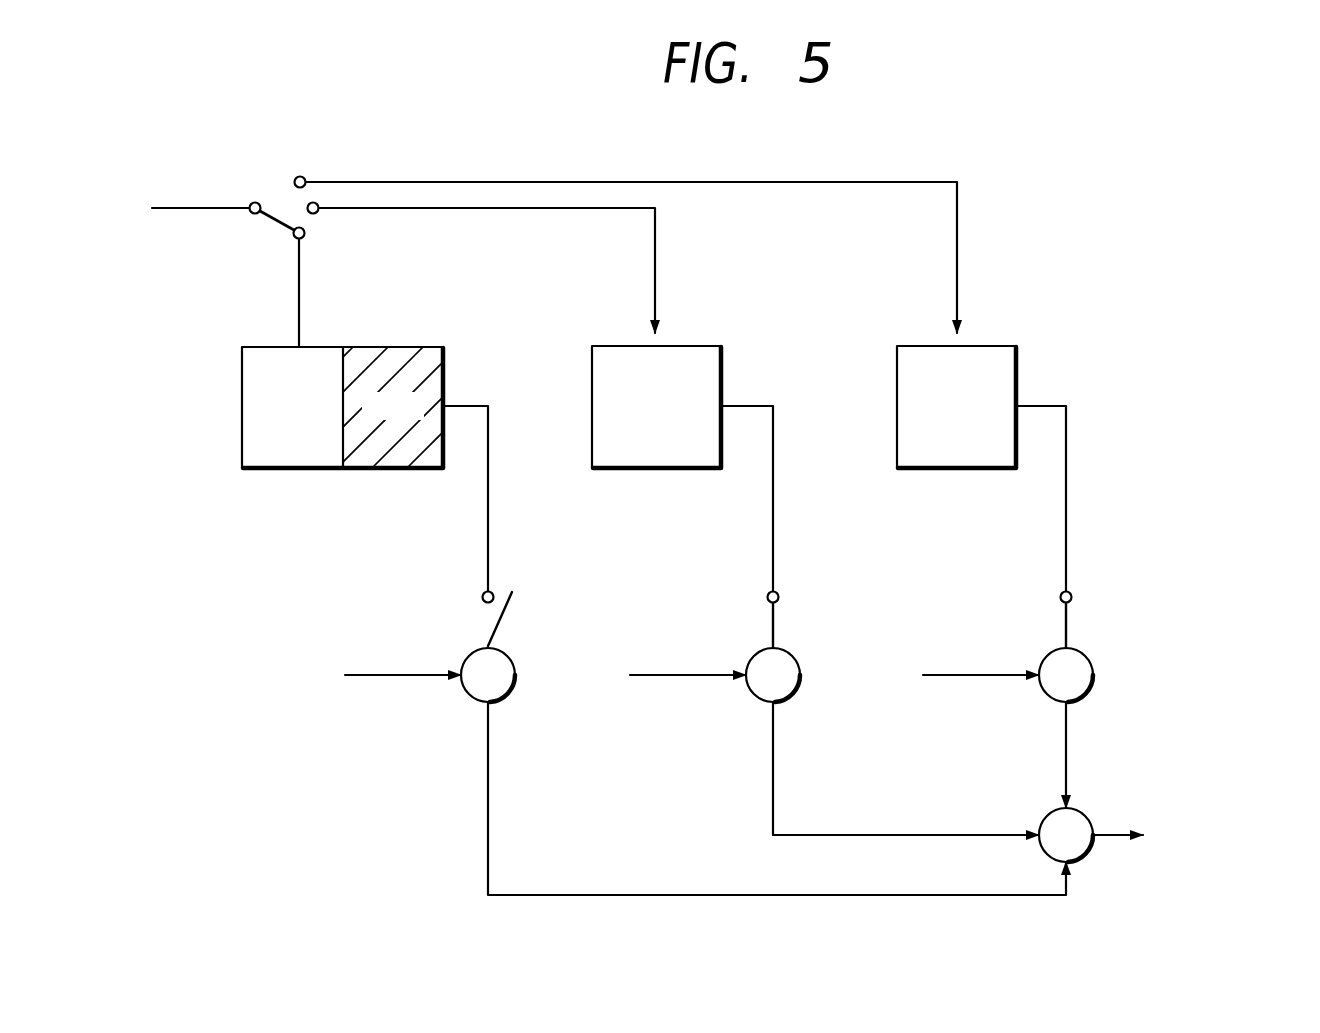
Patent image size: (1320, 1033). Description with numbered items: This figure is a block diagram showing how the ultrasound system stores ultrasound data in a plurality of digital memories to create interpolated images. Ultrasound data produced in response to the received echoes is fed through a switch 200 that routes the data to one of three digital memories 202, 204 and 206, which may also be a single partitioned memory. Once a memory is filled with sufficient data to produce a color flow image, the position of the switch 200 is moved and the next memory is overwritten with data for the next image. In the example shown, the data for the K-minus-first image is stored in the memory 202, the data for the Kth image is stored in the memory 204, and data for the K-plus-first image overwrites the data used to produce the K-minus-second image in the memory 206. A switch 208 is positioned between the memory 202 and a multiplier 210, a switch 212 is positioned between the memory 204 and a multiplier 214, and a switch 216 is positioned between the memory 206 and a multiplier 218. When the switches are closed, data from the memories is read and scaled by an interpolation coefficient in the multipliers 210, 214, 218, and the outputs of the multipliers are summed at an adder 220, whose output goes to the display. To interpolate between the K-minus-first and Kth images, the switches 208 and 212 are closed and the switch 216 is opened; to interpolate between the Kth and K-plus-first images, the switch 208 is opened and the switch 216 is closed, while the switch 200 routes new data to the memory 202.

The switch 200 is at (277, 215).
The memory 202 is at (692, 346).
The memory 204 is at (993, 346).
The memory 206 is at (392, 347).
The switch 208 is at (775, 623).
The multiplier 210 is at (793, 700).
The switch 212 is at (1068, 622).
The multiplier 214 is at (1087, 698).
The switch 216 is at (505, 615).
The multiplier 218 is at (498, 703).
The adder 220 is at (1088, 855).